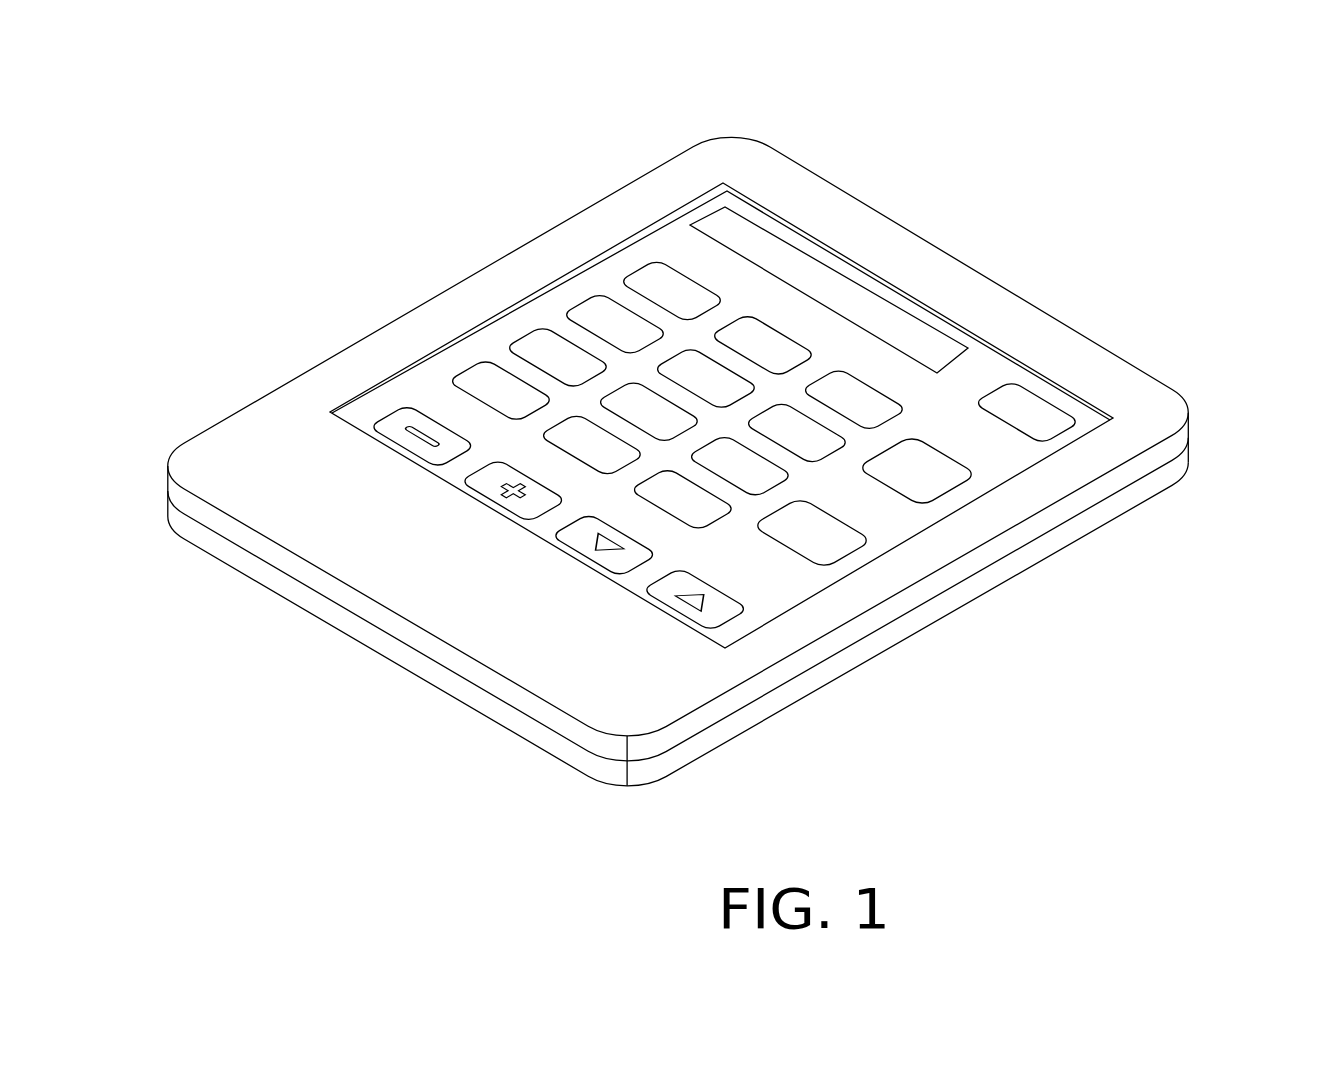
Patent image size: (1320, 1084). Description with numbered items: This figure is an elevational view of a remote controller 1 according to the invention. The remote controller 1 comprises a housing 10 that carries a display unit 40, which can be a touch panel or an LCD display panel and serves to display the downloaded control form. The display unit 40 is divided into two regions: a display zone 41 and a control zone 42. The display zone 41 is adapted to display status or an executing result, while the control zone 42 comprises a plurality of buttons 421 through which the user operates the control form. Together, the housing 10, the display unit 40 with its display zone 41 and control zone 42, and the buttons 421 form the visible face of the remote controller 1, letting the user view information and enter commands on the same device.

The remote controller 1 is at (593, 183).
The housing 10 is at (933, 262).
The display unit 40 is at (1002, 455).
The display zone 41 is at (940, 350).
The control zone 42 is at (778, 595).
The buttons 421 is at (537, 352).